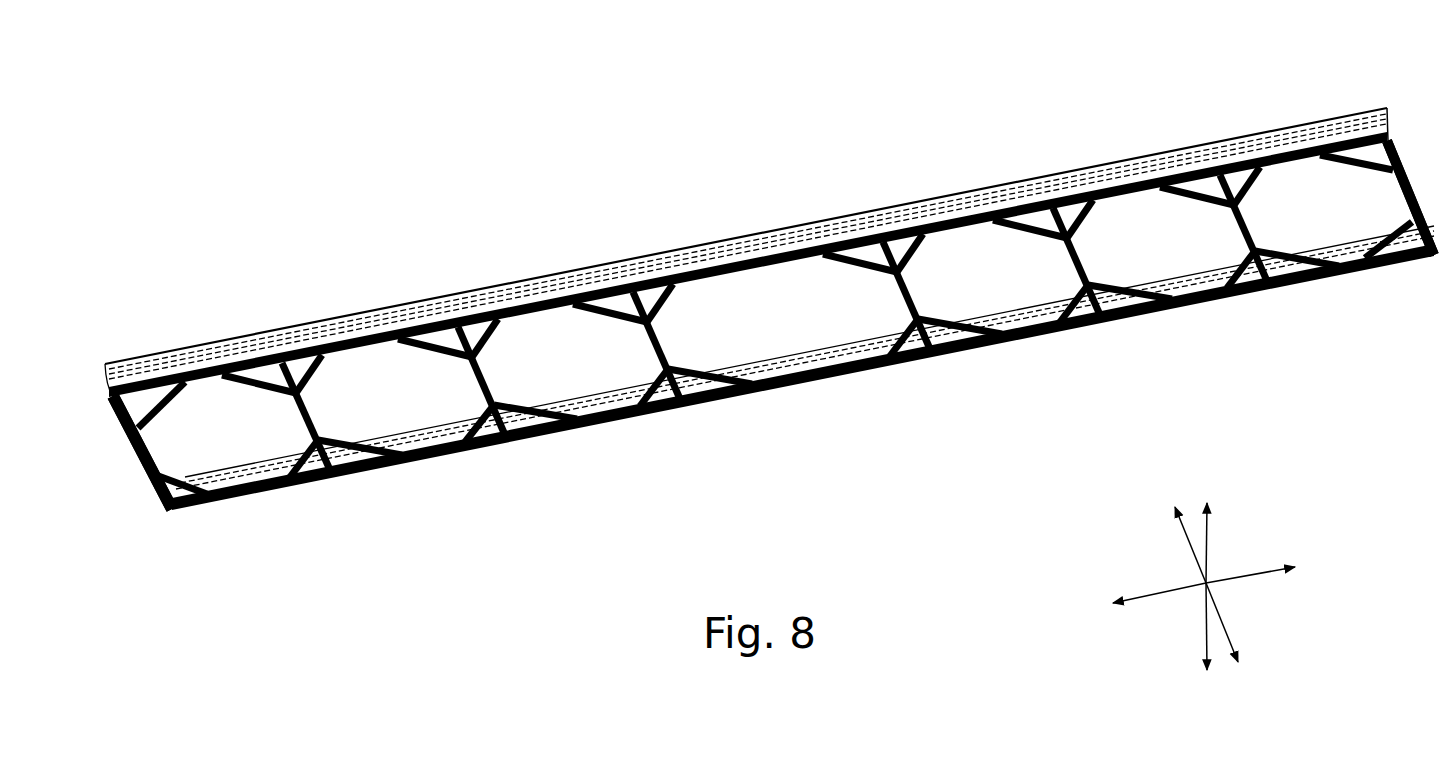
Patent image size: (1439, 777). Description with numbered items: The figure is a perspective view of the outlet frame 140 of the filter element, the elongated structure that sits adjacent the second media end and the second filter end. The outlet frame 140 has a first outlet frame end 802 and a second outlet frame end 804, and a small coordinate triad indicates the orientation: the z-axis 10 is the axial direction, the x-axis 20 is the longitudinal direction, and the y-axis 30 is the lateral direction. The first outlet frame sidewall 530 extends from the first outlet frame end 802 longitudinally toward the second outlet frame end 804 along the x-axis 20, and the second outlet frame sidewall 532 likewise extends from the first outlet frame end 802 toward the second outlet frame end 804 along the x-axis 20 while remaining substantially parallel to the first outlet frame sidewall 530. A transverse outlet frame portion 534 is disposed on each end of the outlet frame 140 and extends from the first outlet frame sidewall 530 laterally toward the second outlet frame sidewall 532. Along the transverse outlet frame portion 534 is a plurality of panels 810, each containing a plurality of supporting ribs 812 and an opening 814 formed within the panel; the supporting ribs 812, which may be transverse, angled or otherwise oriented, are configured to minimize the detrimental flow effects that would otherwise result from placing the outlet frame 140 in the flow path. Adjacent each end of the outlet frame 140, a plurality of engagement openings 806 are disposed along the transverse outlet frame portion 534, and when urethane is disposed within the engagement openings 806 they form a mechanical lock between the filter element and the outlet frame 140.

The outlet frame 140 is at (188, 166).
The first outlet frame end 802 is at (124, 452).
The second outlet frame end 804 is at (1416, 176).
The engagement openings 806 is at (174, 513).
The panels 810 is at (686, 280).
The supporting ribs 812 is at (704, 400).
The opening 814 is at (818, 314).
The first outlet frame sidewall 530 is at (128, 380).
The second outlet frame sidewall 532 is at (250, 464).
The transverse outlet frame portion 534 is at (152, 456).
The z-axis 10 is at (1213, 571).
The x-axis 20 is at (1219, 575).
The y-axis 30 is at (1218, 596).